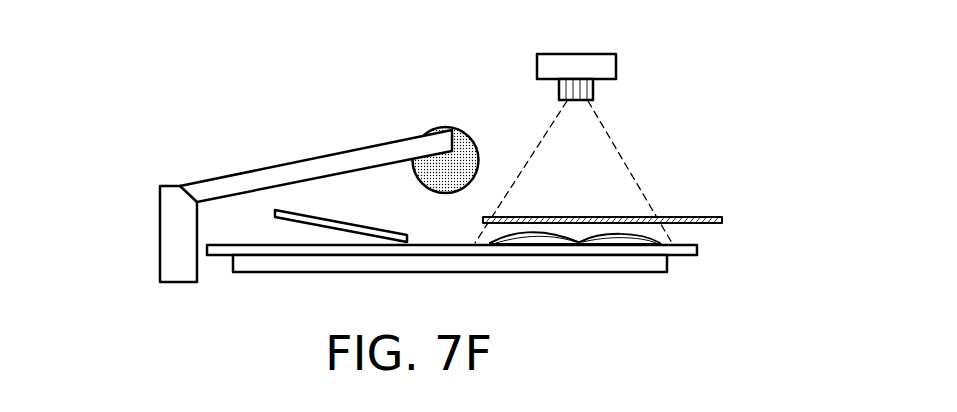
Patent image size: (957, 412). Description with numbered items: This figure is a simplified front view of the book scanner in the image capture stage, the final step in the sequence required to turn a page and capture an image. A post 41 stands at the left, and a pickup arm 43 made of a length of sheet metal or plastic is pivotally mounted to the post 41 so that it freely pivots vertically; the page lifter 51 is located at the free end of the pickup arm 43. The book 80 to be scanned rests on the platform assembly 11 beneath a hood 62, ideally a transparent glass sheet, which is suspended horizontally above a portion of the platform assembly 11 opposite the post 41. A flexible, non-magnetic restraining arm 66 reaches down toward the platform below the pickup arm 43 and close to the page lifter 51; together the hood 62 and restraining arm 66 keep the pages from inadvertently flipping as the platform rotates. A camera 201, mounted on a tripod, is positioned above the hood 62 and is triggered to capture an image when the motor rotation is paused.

The platform assembly 11 is at (699, 251).
The post 41 is at (172, 255).
The pickup arm 43 is at (258, 175).
The page lifter 51 is at (525, 131).
The hood 62 is at (667, 217).
The restraining arm 66 is at (317, 222).
The book 80 is at (590, 245).
The camera 201 is at (601, 67).